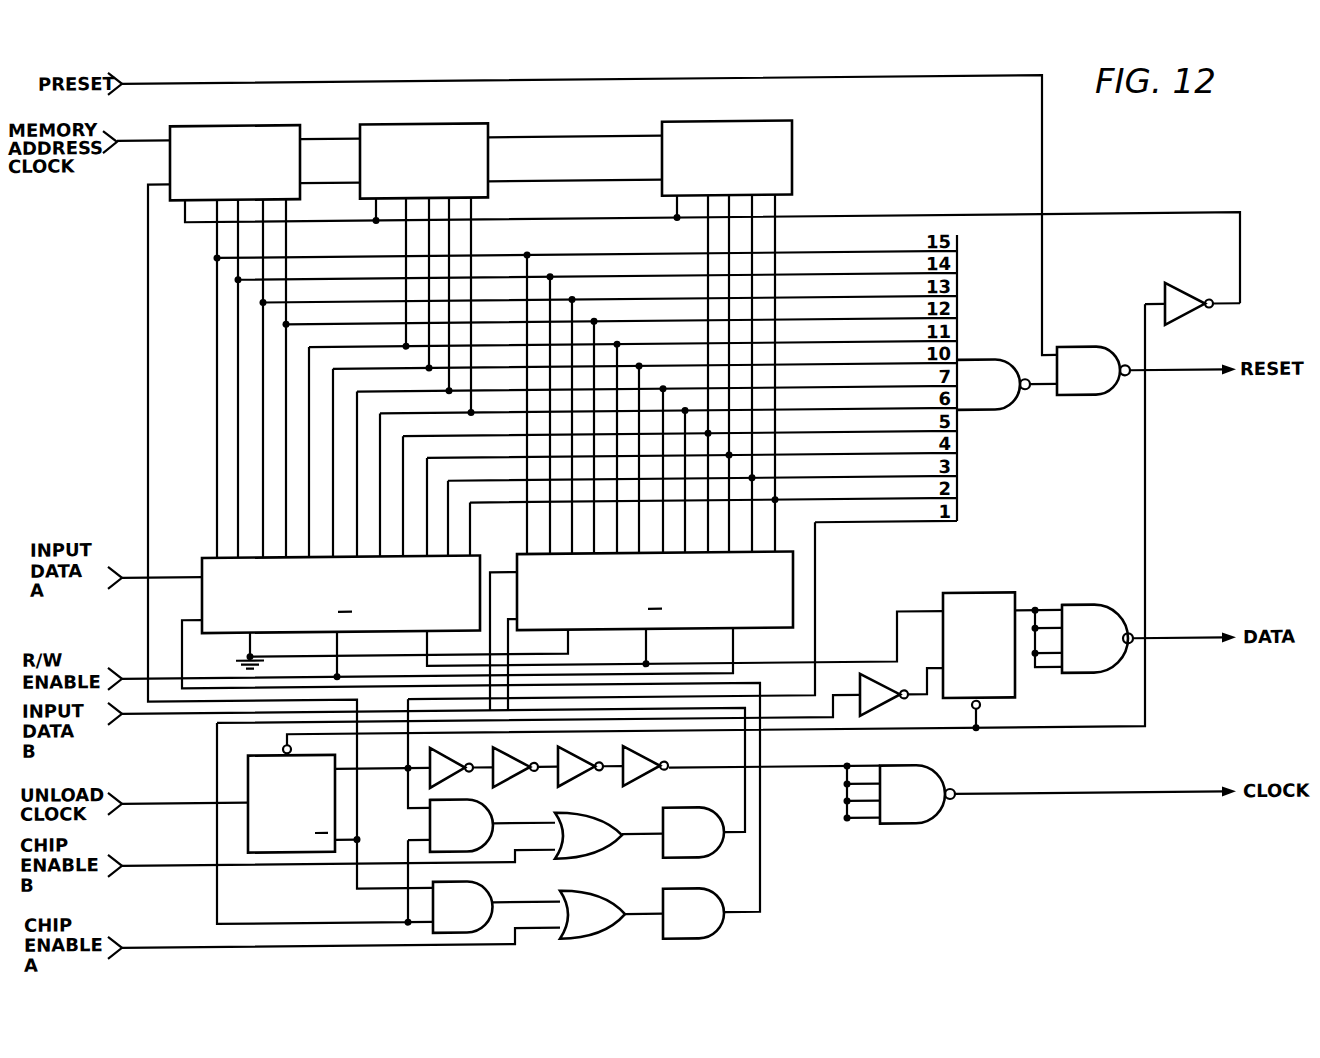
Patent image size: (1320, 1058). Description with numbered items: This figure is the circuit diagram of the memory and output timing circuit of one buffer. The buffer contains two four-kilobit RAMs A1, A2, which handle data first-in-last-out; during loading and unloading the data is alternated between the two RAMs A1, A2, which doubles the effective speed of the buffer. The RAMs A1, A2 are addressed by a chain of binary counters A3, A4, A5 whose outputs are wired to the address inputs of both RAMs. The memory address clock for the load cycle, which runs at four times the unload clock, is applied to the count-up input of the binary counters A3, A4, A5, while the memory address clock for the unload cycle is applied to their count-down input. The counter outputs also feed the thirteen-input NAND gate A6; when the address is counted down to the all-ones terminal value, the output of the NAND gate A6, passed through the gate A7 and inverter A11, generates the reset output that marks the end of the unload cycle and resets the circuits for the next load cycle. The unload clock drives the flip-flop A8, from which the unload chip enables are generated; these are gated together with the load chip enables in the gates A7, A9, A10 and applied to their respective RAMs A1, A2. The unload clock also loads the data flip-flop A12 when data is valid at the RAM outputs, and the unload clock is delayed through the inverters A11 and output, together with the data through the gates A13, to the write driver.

The RAM A1 is at (335, 596).
The RAM A2 is at (646, 592).
The binary counter A3 is at (239, 168).
The binary counter A4 is at (429, 166).
The binary counter A5 is at (718, 163).
The 13 input NAND gate A6 is at (993, 372).
The gate A7 is at (772, 628).
The flip-flop A8 is at (296, 792).
The gate A9 is at (588, 864).
The gate A10 is at (693, 861).
The inverter A11 is at (817, 521).
The data flip-flop A12 is at (979, 653).
The gate A13 is at (999, 704).